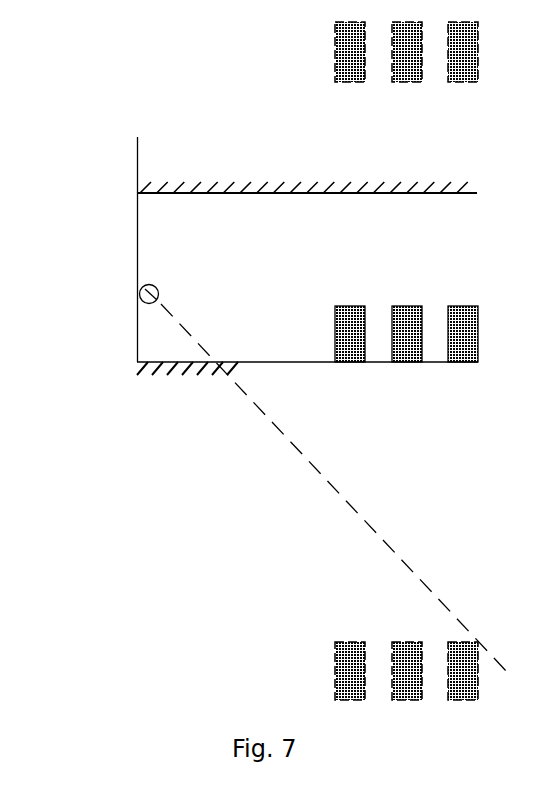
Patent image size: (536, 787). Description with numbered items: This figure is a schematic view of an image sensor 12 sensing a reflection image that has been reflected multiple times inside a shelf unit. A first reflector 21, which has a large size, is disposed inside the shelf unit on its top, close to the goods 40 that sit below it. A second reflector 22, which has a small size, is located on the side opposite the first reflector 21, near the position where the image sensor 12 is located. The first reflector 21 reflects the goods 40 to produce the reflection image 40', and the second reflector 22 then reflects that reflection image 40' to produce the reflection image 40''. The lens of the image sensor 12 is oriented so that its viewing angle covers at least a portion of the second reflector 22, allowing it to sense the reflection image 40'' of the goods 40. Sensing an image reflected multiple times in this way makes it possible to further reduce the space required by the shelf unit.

The image sensor 12 is at (140, 295).
The first reflector 21 is at (167, 192).
The second reflector 22 is at (237, 362).
The goods 40 is at (406, 297).
The reflection image 40' is at (363, 53).
The reflection image 40'' is at (359, 644).